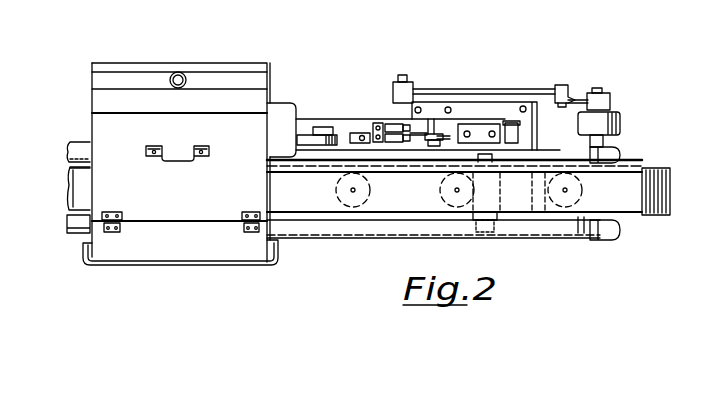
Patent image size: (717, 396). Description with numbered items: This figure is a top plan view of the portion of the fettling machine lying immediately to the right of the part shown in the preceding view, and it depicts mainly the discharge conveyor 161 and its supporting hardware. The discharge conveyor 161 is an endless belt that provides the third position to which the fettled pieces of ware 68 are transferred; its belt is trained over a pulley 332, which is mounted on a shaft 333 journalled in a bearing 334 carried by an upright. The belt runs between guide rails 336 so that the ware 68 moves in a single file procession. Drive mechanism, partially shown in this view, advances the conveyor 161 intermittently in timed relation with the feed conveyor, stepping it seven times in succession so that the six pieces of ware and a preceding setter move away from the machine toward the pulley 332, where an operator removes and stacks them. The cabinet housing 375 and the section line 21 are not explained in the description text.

The section line 21 is at (300, 98).
The pieces of ware 68 is at (371, 191).
The discharge conveyor 161 is at (73, 186).
The pulley 332 is at (648, 168).
The shaft 333 is at (608, 142).
The bearing 334 is at (617, 154).
The guide rails 336 is at (79, 142).
The housing 375 is at (146, 192).